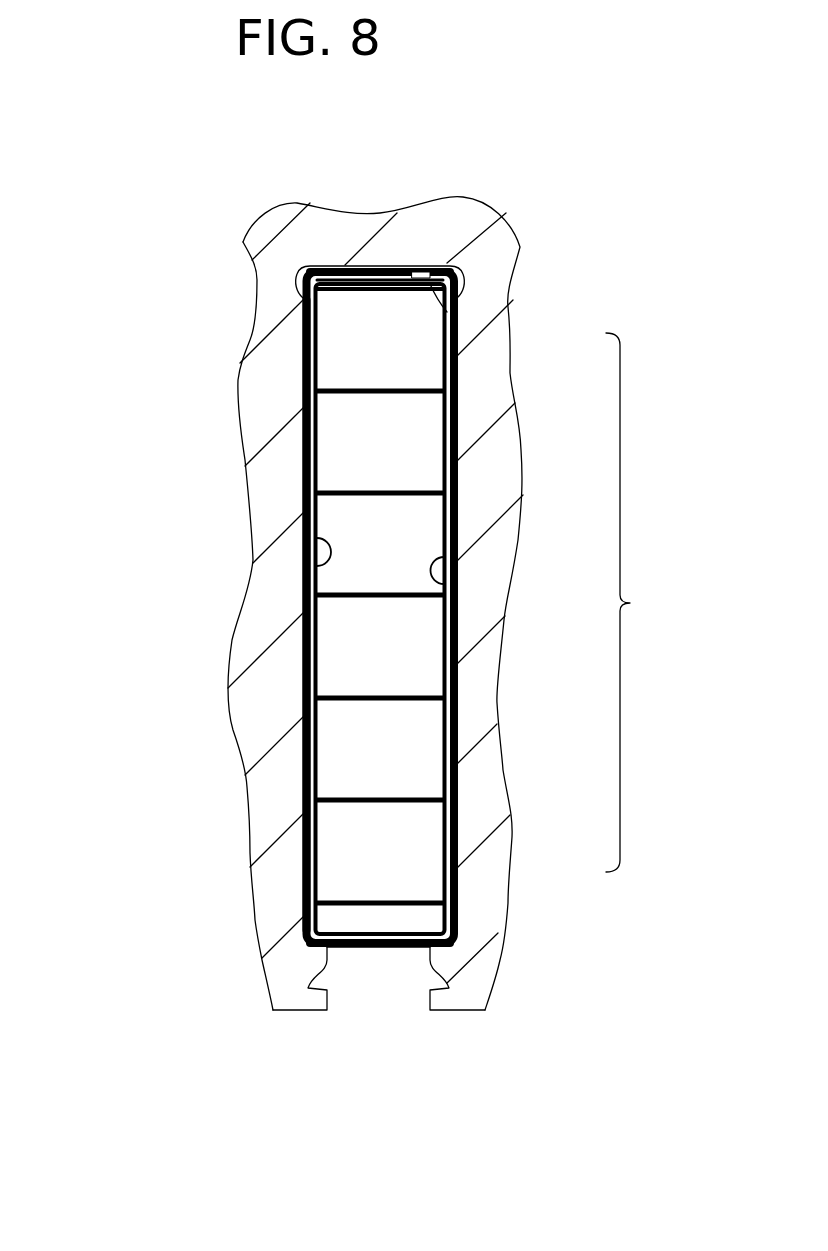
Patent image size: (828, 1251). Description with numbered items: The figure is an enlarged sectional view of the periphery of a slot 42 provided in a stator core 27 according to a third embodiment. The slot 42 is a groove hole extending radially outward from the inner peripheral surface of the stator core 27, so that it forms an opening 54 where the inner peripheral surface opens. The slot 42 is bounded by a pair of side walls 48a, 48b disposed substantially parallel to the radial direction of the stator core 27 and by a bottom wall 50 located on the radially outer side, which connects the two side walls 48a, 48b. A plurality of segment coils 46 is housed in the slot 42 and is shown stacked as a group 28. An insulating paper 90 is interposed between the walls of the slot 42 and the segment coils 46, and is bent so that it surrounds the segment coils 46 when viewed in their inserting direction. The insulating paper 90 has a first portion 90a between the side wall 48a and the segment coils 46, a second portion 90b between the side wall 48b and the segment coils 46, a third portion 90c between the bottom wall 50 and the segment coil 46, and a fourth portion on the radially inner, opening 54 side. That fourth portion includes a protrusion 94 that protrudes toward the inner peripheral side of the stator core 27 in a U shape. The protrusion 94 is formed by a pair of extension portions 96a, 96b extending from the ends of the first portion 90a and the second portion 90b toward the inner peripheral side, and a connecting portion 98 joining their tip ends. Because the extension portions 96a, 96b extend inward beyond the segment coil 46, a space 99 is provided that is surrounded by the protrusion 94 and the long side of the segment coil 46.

The stator core 27 is at (285, 362).
The battery cell stack 28 is at (637, 602).
The slot 42 is at (297, 612).
The segment coil 46 is at (400, 347).
The side wall 48a is at (303, 525).
The side wall 48b is at (452, 587).
The bottom wall 50 is at (460, 314).
The opening 54 is at (382, 1020).
The insulating paper 90 is at (298, 669).
The first portion 90a is at (313, 767).
The second portion 90b is at (458, 710).
The third portion 90c is at (342, 266).
The protrusion 94 is at (378, 953).
The extension portion 96a is at (303, 920).
The extension portion 96b is at (455, 920).
The connecting portion 98 is at (403, 947).
The space 99 is at (371, 923).